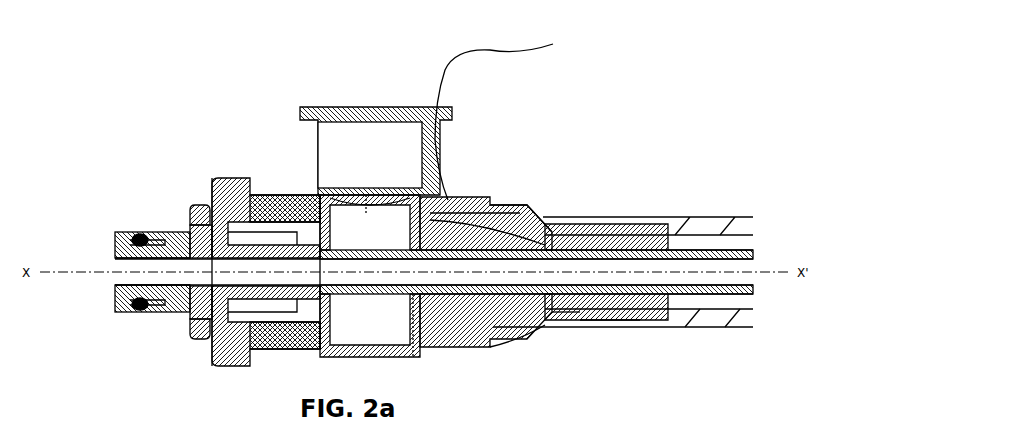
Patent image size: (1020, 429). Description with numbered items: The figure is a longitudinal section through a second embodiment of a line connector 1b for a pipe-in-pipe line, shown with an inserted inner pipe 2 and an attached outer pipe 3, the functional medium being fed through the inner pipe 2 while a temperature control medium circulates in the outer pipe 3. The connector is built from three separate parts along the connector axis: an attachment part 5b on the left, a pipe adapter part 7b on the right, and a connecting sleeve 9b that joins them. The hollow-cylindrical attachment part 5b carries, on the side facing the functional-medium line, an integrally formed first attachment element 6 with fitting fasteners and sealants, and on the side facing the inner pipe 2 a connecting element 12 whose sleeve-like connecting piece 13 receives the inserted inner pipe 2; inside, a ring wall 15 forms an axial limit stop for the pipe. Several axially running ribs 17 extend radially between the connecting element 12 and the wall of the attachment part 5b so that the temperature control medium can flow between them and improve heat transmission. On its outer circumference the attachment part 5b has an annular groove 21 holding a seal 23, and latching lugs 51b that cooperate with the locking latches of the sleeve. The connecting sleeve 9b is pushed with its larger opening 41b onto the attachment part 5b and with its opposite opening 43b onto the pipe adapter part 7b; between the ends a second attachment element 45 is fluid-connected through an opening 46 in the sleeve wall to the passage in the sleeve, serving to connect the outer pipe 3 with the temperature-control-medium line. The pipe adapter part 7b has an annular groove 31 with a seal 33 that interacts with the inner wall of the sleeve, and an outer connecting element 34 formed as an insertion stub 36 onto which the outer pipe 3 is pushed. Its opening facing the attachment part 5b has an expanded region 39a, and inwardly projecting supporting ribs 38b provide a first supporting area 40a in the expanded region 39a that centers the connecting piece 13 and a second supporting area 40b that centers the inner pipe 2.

The line connector 1b is at (186, 92).
The inner pipe 2 is at (683, 217).
The outer pipe 3 is at (645, 217).
The attachment part 5b is at (150, 232).
The first attachment element 6 is at (104, 315).
The pipe adapter part 7b is at (560, 217).
The connecting sleeve 9b is at (505, 114).
The connecting element 12 is at (196, 335).
The connecting piece 13 is at (322, 350).
The ring wall 15 is at (265, 360).
The ribs 17 is at (205, 337).
The annular groove 21 is at (226, 195).
The seal 23 is at (267, 180).
The annular groove 31 is at (485, 195).
The seal 33 is at (470, 198).
The outer connecting element 34 is at (634, 343).
The insertion stub 36 is at (603, 333).
The supporting ribs 38b is at (512, 337).
The expanded region 39a is at (410, 355).
The first supporting area 40a is at (454, 348).
The second supporting area 40b is at (580, 332).
The opening 41b is at (272, 150).
The opening 43b is at (465, 163).
The second attachment element 45 is at (344, 80).
The opening 46 is at (383, 172).
The latching lugs 51b is at (213, 187).